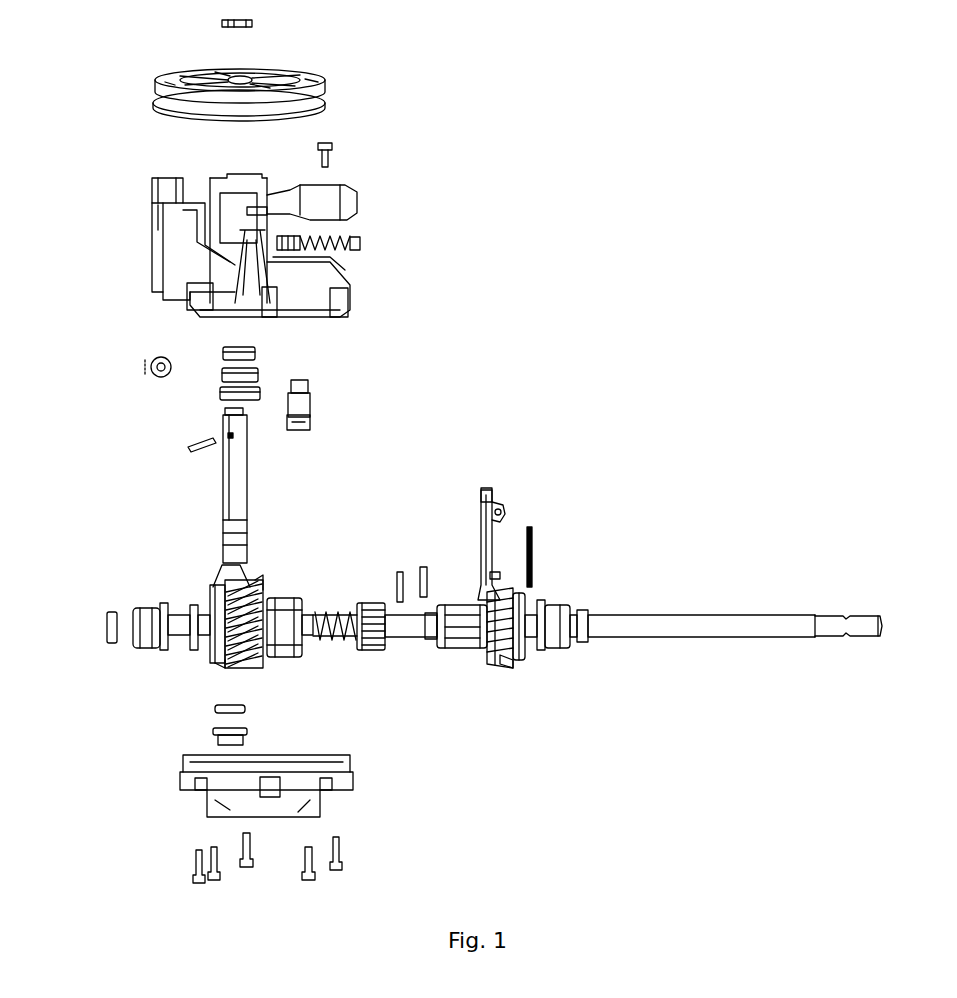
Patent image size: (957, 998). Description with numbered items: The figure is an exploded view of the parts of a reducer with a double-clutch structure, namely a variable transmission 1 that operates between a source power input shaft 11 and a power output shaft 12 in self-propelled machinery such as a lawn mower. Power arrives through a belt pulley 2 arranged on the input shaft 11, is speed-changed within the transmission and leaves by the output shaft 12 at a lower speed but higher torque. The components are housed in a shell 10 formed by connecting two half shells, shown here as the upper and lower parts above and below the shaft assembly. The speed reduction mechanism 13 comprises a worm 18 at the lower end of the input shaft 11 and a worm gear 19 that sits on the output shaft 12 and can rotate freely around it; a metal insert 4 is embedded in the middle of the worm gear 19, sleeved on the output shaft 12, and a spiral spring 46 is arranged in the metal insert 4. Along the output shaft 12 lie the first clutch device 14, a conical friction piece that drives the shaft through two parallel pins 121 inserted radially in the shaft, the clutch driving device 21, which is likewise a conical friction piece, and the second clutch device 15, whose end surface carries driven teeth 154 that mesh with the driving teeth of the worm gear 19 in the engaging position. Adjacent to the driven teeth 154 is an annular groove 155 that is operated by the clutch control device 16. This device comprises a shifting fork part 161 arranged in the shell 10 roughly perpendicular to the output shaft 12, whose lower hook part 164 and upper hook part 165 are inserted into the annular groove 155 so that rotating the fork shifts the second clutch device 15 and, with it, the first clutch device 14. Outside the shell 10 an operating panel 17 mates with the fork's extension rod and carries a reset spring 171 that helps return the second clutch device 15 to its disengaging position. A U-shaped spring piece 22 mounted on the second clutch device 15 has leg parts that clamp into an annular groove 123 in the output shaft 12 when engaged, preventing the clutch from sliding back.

The variable transmission 1 is at (543, 277).
The belt pulley 2 is at (323, 88).
The metal insert 4 is at (284, 657).
The shell 10 is at (165, 268).
The source power input shaft 11 is at (233, 460).
The power output shaft 12 is at (700, 638).
The speed reduction mechanism 13 is at (225, 545).
The first clutch device 14 is at (465, 648).
The second clutch device 15 is at (507, 663).
The clutch control device 16 is at (485, 490).
The operating panel 17 is at (340, 207).
The worm 18 is at (248, 582).
The worm gear 19 is at (222, 665).
The clutch driving device 21 is at (367, 602).
The U-shaped spring piece 22 is at (532, 557).
The spiral spring 46 is at (338, 647).
The pins 121 is at (400, 572).
The annular groove 123 is at (430, 633).
The driven teeth 154 is at (507, 660).
The annular groove 155 is at (570, 652).
The shifting fork part 161 is at (485, 500).
The lower hook part 164 is at (498, 578).
The upper hook part 165 is at (550, 480).
The reset spring 171 is at (360, 248).